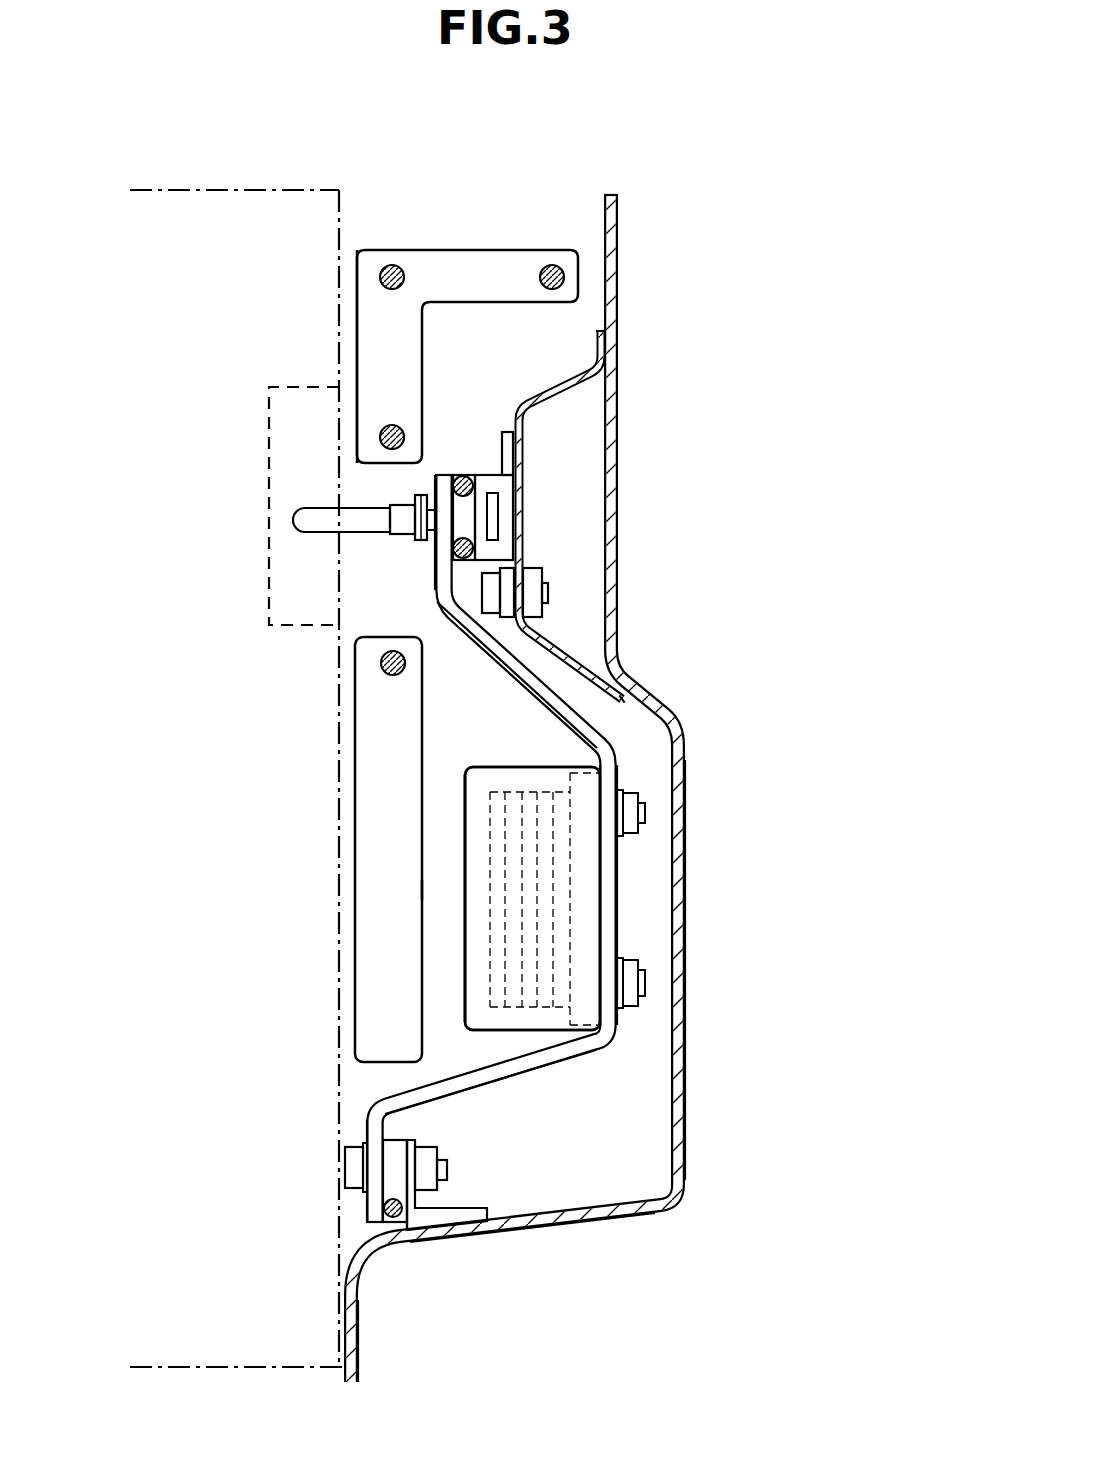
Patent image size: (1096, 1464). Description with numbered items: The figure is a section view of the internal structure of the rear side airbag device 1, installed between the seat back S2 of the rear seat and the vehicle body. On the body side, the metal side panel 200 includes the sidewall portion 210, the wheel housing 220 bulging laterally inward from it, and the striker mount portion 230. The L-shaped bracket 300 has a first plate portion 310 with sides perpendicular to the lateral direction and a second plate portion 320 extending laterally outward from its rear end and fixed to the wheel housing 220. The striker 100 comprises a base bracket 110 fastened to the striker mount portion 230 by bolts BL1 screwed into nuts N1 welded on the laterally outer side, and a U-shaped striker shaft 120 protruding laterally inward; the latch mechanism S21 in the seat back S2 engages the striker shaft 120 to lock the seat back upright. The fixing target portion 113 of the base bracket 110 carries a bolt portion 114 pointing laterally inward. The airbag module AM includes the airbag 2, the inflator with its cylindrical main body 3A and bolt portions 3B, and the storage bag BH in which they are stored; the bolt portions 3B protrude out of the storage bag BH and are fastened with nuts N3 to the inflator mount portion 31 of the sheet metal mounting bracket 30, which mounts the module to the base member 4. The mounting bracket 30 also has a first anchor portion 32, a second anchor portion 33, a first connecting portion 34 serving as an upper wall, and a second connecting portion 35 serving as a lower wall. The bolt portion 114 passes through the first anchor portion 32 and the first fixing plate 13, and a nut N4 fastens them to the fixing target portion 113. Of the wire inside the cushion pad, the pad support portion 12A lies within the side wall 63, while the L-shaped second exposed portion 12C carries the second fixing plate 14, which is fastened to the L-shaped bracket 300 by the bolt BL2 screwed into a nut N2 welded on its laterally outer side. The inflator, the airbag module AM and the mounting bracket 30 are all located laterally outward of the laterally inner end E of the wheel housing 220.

The seat back S2 is at (249, 190).
The latch mechanism S21 is at (269, 410).
The rear side airbag device 1 is at (527, 196).
The airbag 2 is at (510, 788).
The main body 3A is at (585, 915).
The bolt portion 3B is at (642, 983).
The base member 4 is at (400, 245).
The pad support portion 12A is at (383, 663).
The second exposed portion 12C is at (396, 1222).
The first fixing plate 13 is at (483, 500).
The second fixing plate 14 is at (388, 1195).
The mounting bracket 30 is at (628, 1030).
The inflator mount portion 31 is at (612, 870).
The first anchor portion 32 is at (440, 575).
The second anchor portion 33 is at (370, 1130).
The first connecting portion 34 is at (585, 718).
The second connecting portion 35 is at (555, 1060).
The side wall 63 is at (375, 740).
The striker 100 is at (465, 436).
The base bracket 110 is at (508, 428).
The fixing target portion 113 is at (492, 516).
The bolt portion 114 is at (408, 510).
The striker shaft 120 is at (300, 520).
The side panel 200 is at (640, 250).
The sidewall portion 210 is at (690, 832).
The wheel housing 220 is at (590, 1218).
The striker mount portion 230 is at (565, 387).
The L-shaped bracket 300 is at (620, 1290).
The first plate portion 310 is at (433, 1178).
The second plate portion 320 is at (420, 1132).
The airbag module AM is at (448, 890).
The storage bag BH is at (460, 830).
The bolt BL1 is at (488, 605).
The bolt BL2 is at (343, 1168).
The laterally inner end E is at (358, 1352).
The nut N1 is at (548, 590).
The nut N2 is at (427, 1177).
The nut N3 is at (625, 1000).
The nut N4 is at (420, 533).